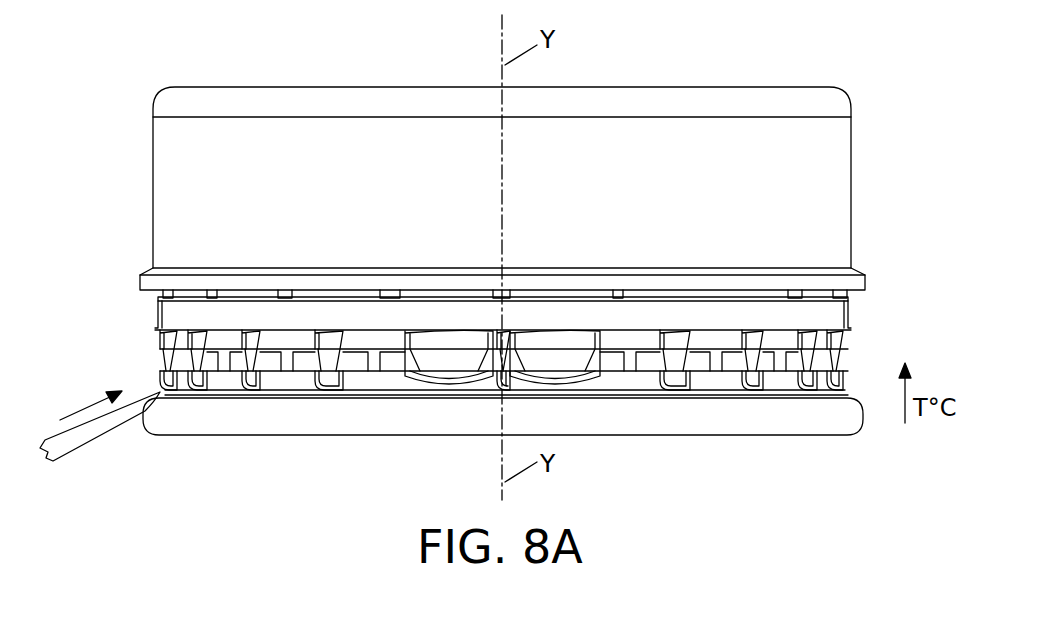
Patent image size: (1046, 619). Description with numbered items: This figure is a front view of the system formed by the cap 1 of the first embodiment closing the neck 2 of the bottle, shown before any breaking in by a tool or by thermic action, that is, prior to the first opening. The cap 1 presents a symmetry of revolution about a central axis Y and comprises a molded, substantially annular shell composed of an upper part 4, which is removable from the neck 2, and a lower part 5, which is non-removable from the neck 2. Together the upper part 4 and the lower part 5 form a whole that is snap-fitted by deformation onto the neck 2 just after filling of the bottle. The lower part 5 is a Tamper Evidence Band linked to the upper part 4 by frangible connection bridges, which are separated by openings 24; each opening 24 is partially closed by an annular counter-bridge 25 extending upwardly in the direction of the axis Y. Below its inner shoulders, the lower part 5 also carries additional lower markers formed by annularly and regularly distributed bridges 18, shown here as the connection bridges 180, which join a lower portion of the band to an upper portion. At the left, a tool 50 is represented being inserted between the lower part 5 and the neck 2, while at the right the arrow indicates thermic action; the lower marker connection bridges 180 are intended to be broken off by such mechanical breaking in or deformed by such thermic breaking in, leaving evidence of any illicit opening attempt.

The cap 1 is at (618, 207).
The neck 2 is at (863, 428).
The upper part 4 is at (125, 90).
The lower part 5 is at (878, 290).
The bridges 18 is at (393, 294).
The openings 24 is at (680, 300).
The annular counter-bridge 25 is at (713, 295).
The tool 50 is at (95, 432).
The connection bridges 180 is at (330, 368).